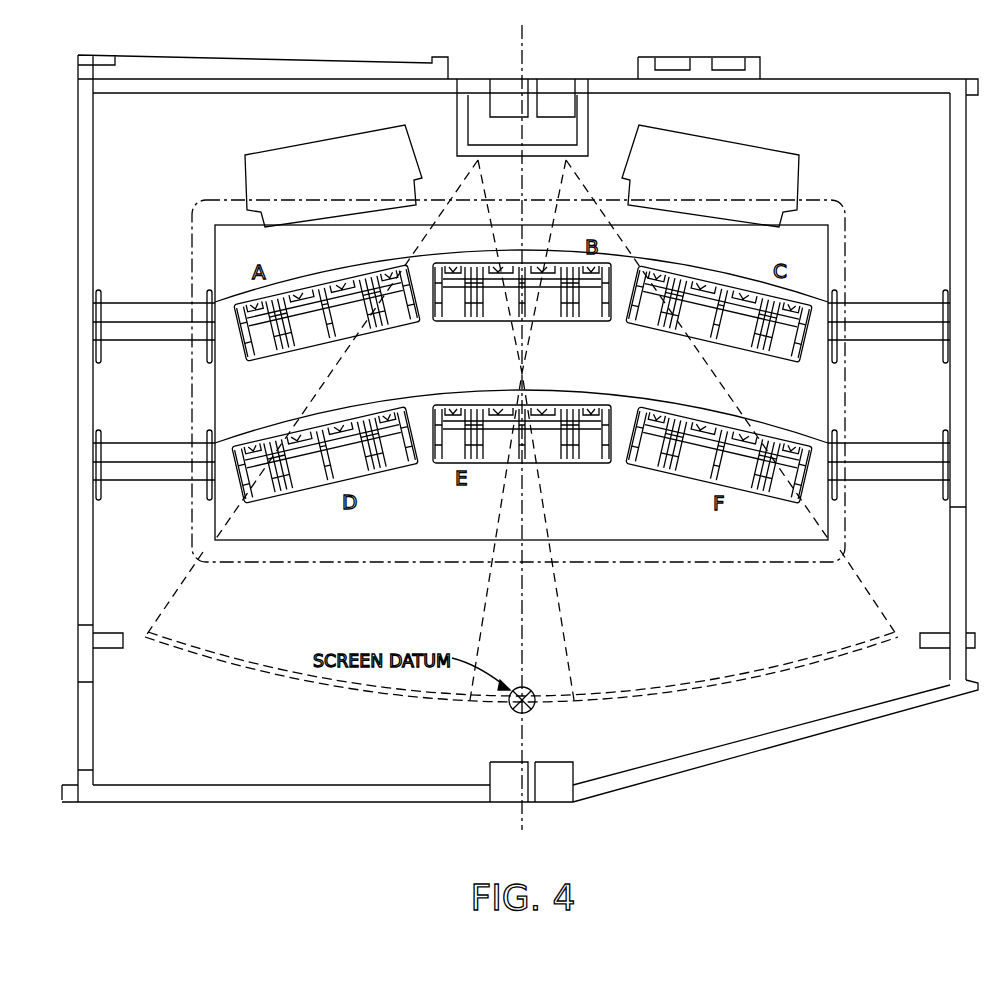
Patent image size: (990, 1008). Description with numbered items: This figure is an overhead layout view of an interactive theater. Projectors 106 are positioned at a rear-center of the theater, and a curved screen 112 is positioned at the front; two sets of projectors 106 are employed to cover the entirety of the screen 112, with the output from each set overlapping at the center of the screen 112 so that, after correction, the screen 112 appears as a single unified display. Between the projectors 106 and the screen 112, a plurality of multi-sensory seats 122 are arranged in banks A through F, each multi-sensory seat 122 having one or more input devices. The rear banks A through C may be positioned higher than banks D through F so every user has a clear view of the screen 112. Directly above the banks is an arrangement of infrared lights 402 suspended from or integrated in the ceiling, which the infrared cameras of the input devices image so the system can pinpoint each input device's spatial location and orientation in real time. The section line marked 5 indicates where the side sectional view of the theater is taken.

The projectors 106 is at (553, 108).
The infrared light arrangement 402 is at (848, 212).
The multi-sensory seat 122 is at (588, 455).
The curved screen 112 is at (273, 675).
The section line 5- 5 is at (488, 822).